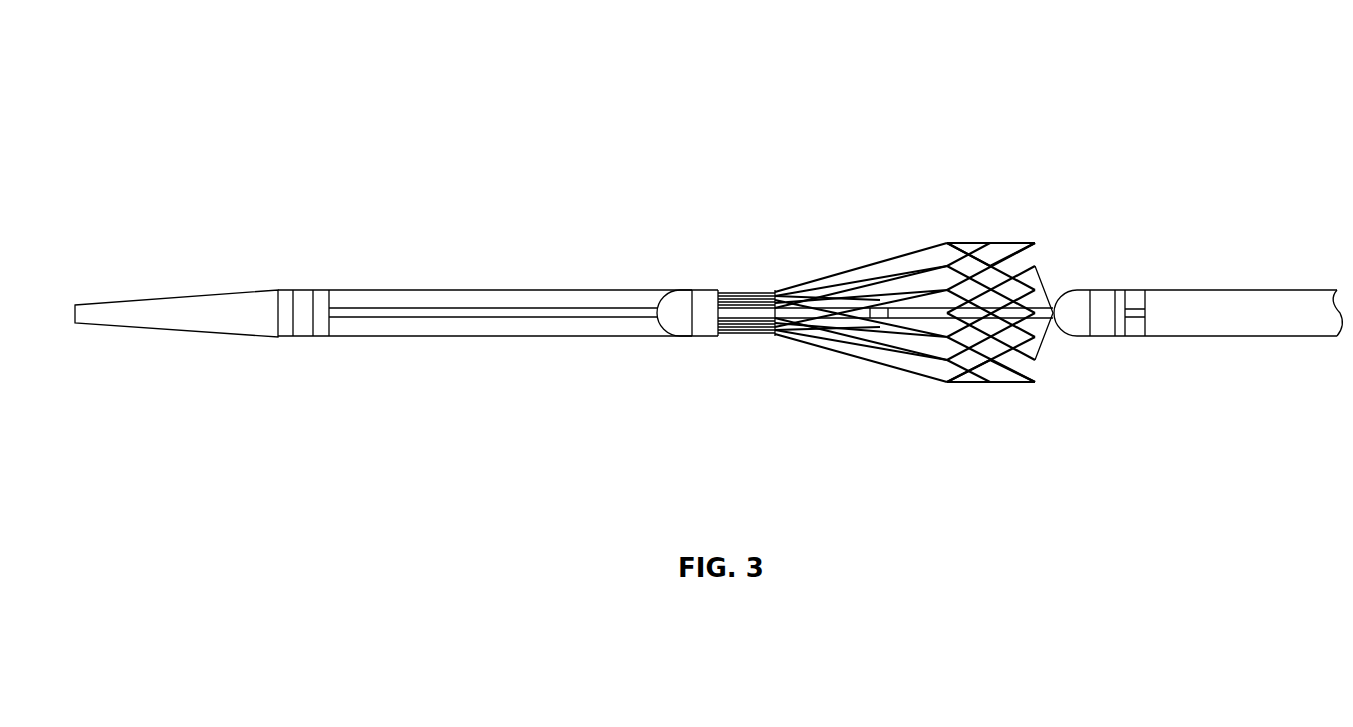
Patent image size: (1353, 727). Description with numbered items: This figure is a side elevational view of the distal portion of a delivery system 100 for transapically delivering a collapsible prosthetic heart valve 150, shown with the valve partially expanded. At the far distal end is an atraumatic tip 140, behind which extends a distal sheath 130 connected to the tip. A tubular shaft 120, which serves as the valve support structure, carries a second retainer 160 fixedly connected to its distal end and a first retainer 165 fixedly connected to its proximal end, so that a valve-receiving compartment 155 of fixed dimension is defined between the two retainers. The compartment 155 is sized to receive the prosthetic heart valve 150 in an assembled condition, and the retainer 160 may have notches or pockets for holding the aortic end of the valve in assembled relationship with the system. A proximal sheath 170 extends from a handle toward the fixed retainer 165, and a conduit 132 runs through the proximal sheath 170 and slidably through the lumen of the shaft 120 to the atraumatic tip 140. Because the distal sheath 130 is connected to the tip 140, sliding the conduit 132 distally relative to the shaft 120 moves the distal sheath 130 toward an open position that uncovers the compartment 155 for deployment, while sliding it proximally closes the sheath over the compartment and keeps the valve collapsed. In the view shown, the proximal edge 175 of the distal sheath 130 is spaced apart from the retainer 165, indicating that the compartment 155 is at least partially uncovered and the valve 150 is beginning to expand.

The delivery system 100 is at (178, 92).
The tubular shaft 120 is at (965, 303).
The distal sheath 130 is at (490, 290).
The conduit 132 is at (367, 312).
The atraumatic tip 140 is at (128, 308).
The collapsible prosthetic heart valve 150 is at (830, 278).
The valve-receiving compartment 155 is at (832, 353).
The second retainer 160 is at (681, 292).
The first retainer 165 is at (1075, 290).
The proximal sheath 170 is at (1165, 290).
The proximal edge 175 is at (758, 290).